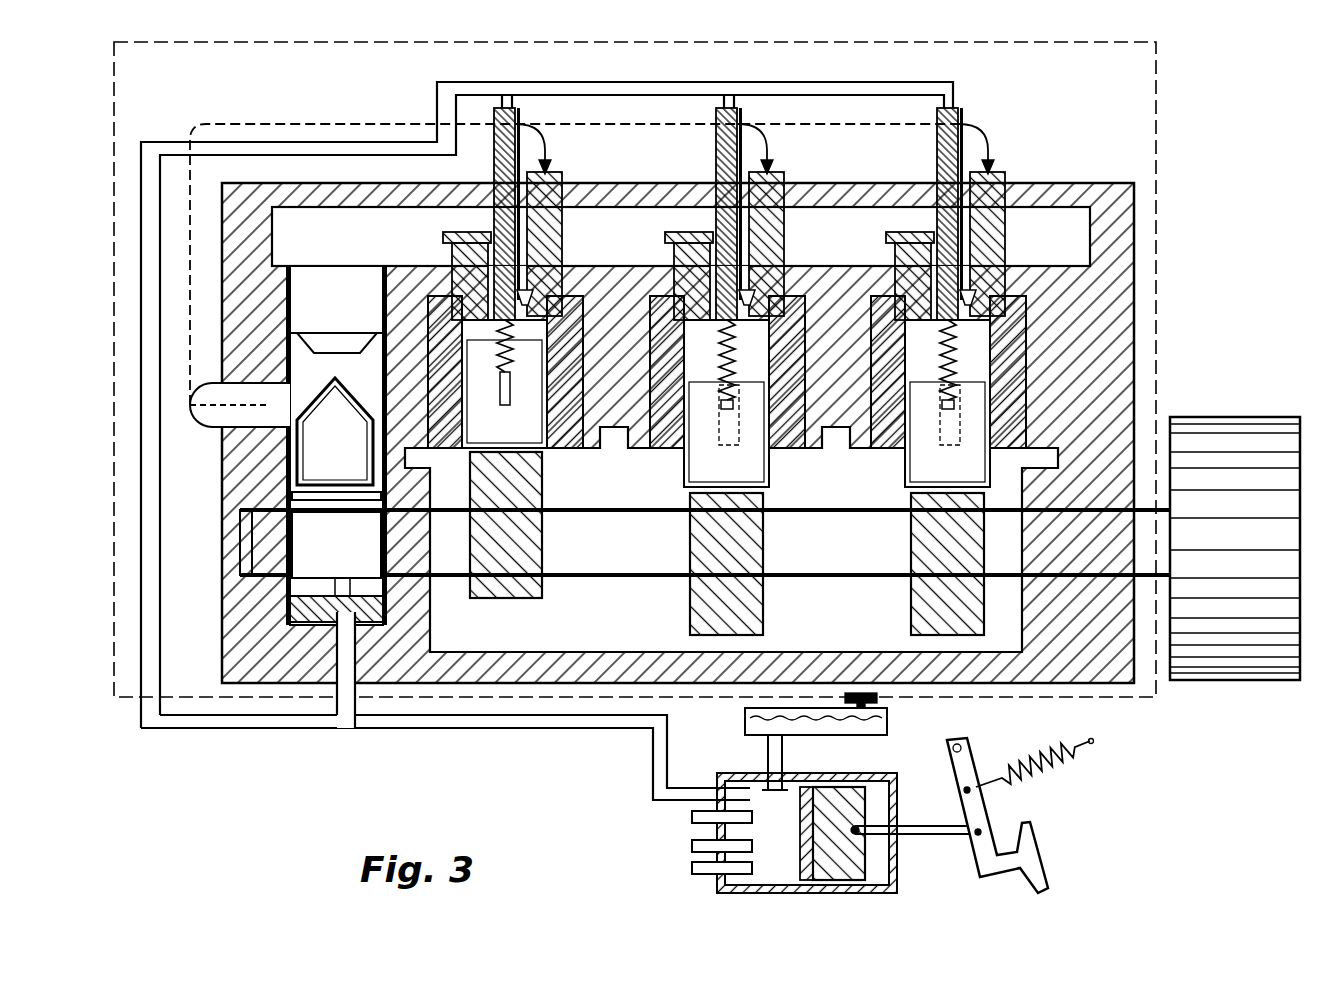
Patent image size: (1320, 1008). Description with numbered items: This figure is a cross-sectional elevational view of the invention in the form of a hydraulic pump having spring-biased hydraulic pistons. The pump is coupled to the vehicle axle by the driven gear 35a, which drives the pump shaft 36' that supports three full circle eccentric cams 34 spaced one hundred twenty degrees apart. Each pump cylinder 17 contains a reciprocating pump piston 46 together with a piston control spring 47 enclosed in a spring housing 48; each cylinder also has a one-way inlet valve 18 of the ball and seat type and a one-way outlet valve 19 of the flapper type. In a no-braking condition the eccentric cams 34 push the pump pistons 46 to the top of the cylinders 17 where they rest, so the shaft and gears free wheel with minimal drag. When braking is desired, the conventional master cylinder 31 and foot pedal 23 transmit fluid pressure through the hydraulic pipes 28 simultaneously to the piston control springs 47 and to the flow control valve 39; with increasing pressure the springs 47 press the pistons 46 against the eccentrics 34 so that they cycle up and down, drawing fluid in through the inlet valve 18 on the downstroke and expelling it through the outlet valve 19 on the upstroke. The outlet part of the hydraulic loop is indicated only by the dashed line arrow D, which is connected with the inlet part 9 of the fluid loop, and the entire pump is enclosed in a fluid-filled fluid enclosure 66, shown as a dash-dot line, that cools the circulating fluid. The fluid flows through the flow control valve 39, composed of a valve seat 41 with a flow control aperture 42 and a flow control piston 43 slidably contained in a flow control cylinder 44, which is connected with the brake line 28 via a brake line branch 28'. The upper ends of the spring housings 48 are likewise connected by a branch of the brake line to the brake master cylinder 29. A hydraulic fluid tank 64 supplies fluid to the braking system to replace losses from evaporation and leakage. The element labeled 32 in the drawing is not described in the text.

The dashed line D is at (205, 127).
The hydraulic pipes 28 is at (547, 456).
The inlet part of the hydraulic fluid loop 9 is at (678, 433).
The fluid enclosure 66 is at (1136, 262).
The valve seat 41 is at (328, 333).
The flow control valve 39 is at (190, 420).
The flow control aperture 42 is at (268, 400).
The pump shaft 36' is at (731, 539).
The inlet valve 18 is at (578, 288).
The pump piston 46 is at (726, 403).
The eccentric cams 34 is at (517, 478).
The piston control spring 47 is at (966, 343).
The outlet valve 19 is at (452, 246).
The spring housing 48 is at (495, 225).
The pump cylinder 17 is at (1000, 318).
The flow control piston 43 is at (335, 431).
The flow control cylinder 44 is at (358, 508).
The brake line branch 28' is at (411, 670).
The driven gear 35a is at (1248, 480).
The master cylinder 31 is at (802, 893).
The brake master cylinder 29 is at (752, 832).
The actuator piston rod 32 is at (928, 836).
The hydraulic fluid tank 64 is at (896, 746).
The foot pedal 23 is at (1040, 847).